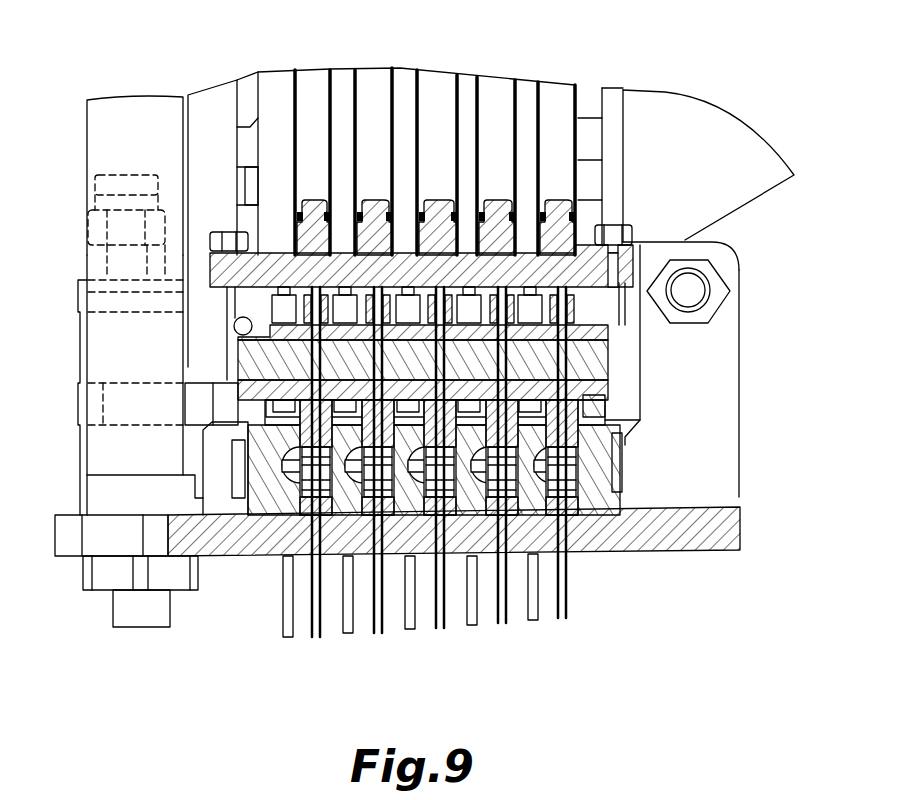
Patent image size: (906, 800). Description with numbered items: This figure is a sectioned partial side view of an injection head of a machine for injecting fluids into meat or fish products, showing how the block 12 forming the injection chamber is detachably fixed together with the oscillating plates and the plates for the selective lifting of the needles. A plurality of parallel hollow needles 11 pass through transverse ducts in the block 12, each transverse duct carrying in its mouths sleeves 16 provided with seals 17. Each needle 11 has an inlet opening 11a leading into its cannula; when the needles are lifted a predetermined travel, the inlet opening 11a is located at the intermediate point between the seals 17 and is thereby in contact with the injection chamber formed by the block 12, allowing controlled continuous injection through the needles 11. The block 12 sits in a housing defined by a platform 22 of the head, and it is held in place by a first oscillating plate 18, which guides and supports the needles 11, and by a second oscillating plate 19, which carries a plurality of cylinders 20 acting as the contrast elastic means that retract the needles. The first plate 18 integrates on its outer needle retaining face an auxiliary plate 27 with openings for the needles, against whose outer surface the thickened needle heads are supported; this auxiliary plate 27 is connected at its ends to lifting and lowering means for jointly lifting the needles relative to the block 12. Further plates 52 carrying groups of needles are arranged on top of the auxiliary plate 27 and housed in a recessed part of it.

The cylinders 20 is at (440, 100).
The plates carrying groups of needles 52 is at (525, 250).
The second oscillating plate 19 is at (262, 270).
The auxiliary plate 27 is at (590, 357).
The sleeves 16 is at (590, 403).
The first oscillating plate 18 is at (258, 398).
The seals 17 is at (625, 487).
The platform 22 is at (622, 530).
The block 12 is at (263, 490).
The hollow needles 11 is at (575, 600).
The inlet opening 11a is at (535, 505).